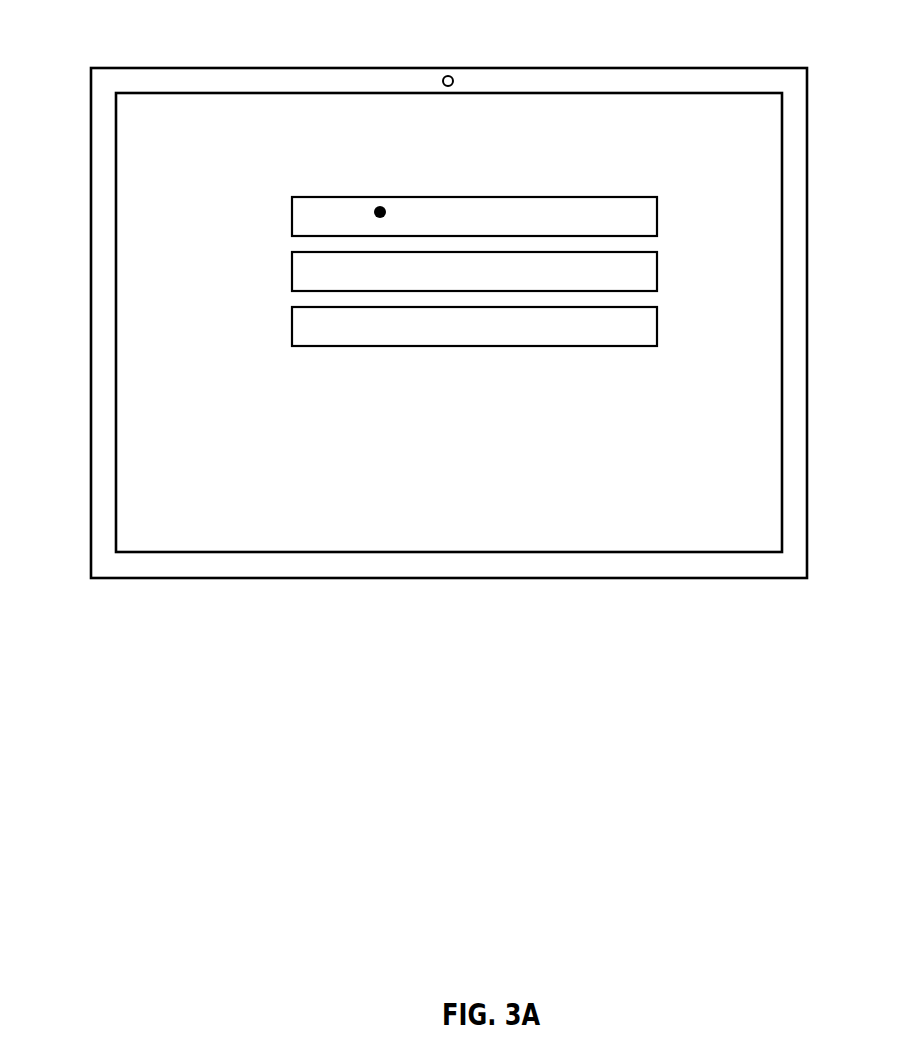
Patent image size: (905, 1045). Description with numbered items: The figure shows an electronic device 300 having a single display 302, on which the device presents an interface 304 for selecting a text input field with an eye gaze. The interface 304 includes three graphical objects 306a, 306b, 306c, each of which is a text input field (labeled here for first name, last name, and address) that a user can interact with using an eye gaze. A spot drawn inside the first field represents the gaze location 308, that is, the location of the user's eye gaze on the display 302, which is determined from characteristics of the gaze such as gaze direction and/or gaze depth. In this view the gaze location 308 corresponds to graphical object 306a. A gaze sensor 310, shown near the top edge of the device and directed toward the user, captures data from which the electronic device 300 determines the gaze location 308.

The electronic device 300 is at (115, 35).
The display 302 is at (515, 93).
The interface 304 is at (647, 122).
The graphical object 306a is at (657, 215).
The graphical object 306b is at (657, 270).
The graphical object 306c is at (657, 325).
The gaze location 308 is at (380, 206).
The gaze sensor 310 is at (448, 76).